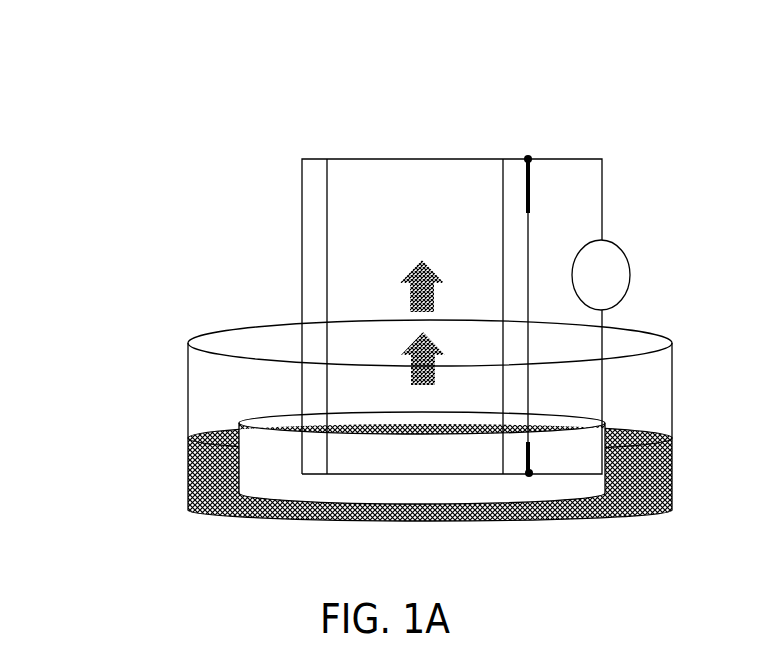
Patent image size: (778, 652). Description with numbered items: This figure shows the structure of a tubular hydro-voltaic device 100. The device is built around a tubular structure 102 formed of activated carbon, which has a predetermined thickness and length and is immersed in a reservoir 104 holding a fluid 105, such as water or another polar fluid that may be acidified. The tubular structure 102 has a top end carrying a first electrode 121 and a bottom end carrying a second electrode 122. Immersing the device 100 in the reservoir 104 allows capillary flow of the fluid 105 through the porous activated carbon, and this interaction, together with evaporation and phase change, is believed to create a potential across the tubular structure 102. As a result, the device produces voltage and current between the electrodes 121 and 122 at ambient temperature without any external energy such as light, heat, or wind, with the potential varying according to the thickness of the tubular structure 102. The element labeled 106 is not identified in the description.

The tubular hydro-voltaic device 100 is at (185, 97).
The tubular structure 102 is at (310, 238).
The reservoir 104 is at (187, 484).
The fluid 105 is at (187, 506).
The electrolyte liquid 106 is at (273, 457).
The first electrode 121 is at (538, 187).
The second electrode 122 is at (535, 470).